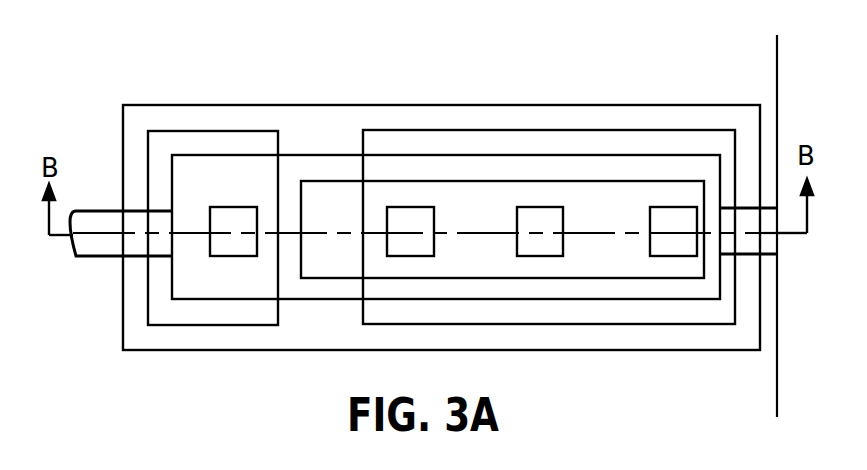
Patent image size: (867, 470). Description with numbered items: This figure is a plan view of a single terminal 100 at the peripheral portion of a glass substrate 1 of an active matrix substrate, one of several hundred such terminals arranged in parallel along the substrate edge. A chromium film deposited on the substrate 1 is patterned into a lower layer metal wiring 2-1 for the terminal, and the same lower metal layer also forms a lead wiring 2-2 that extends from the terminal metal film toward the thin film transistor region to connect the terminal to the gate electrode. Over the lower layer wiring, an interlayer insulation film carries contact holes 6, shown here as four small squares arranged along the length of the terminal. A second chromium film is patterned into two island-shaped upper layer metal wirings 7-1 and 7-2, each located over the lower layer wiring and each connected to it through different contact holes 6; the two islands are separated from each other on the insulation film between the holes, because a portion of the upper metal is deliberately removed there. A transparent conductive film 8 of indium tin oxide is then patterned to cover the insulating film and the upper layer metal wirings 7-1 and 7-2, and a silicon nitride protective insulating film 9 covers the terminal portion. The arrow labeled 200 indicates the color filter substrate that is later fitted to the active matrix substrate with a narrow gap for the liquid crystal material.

The substrate 1 is at (780, 104).
The transparent conductive film 8 is at (630, 104).
The upper layer metal wiring 7-1 is at (192, 131).
The upper layer metal wiring 7-2 is at (526, 130).
The lower layer metal wiring 2-1 is at (322, 155).
The protective insulating film 9 is at (587, 278).
The lead wiring 2-2 is at (102, 252).
The contact holes 6 is at (405, 207).
The terminal 100 is at (471, 62).
The color filter substrate 200 is at (588, 97).